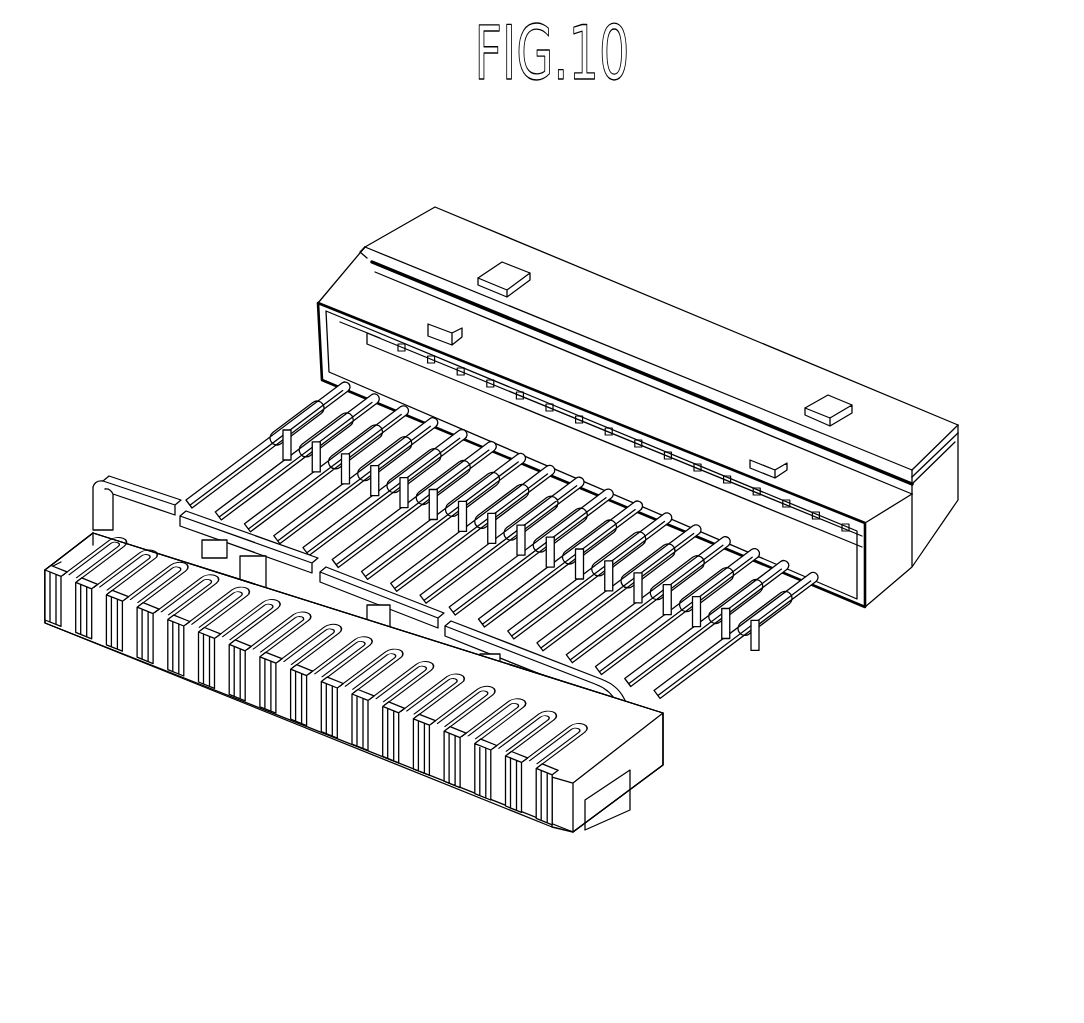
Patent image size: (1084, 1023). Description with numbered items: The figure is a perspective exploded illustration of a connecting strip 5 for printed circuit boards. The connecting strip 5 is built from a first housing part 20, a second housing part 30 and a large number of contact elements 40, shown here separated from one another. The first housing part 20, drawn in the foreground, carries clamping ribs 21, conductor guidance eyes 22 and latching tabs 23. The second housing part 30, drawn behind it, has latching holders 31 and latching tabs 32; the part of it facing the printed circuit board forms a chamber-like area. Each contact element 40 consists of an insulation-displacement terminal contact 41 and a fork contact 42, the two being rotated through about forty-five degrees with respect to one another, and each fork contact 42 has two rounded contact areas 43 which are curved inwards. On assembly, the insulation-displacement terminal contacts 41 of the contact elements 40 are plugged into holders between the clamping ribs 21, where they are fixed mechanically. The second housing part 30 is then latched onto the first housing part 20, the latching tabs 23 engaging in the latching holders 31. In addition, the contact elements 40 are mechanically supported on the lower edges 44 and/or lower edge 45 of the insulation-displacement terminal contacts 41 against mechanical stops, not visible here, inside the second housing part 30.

The connecting strip 5 is at (208, 347).
The first housing part 20 is at (660, 800).
The clamping ribs 21 is at (88, 632).
The conductor guidance eyes 22 is at (158, 501).
The latching tabs 23 is at (100, 540).
The second housing part 30 is at (697, 276).
The latching holders 31 is at (428, 328).
The latching tabs 32 is at (505, 280).
The contact elements 40 is at (199, 420).
The insulation-displacement terminal contact 41 is at (720, 653).
The fork contact 42 is at (763, 635).
The rounded contact areas 43 is at (807, 593).
The lower edges 44 is at (278, 426).
The lower edge 45 is at (306, 406).